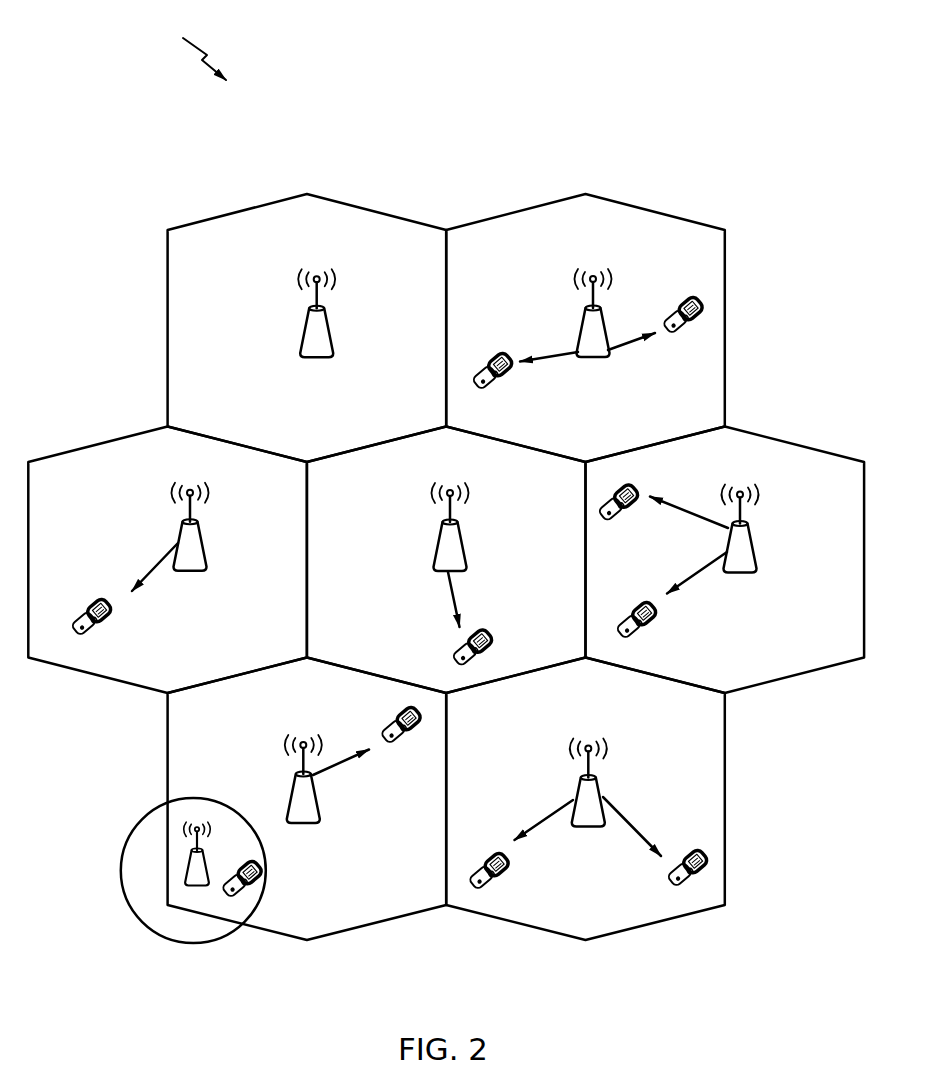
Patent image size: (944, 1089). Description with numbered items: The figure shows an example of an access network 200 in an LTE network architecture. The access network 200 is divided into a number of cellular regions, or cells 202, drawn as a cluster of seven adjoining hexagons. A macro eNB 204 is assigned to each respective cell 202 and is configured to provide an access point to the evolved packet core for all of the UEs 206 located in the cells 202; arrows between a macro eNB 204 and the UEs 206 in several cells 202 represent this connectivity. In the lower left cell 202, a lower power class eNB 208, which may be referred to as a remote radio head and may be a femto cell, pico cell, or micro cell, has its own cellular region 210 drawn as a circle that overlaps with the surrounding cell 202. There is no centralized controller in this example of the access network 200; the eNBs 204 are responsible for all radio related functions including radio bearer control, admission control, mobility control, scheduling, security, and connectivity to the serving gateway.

The access network 200 is at (187, 49).
The cell 202 is at (166, 252).
The macro eNB 204 is at (314, 275).
The UE 206 is at (690, 298).
The lower power class eNB 208 is at (194, 849).
The cellular region 210 is at (127, 906).